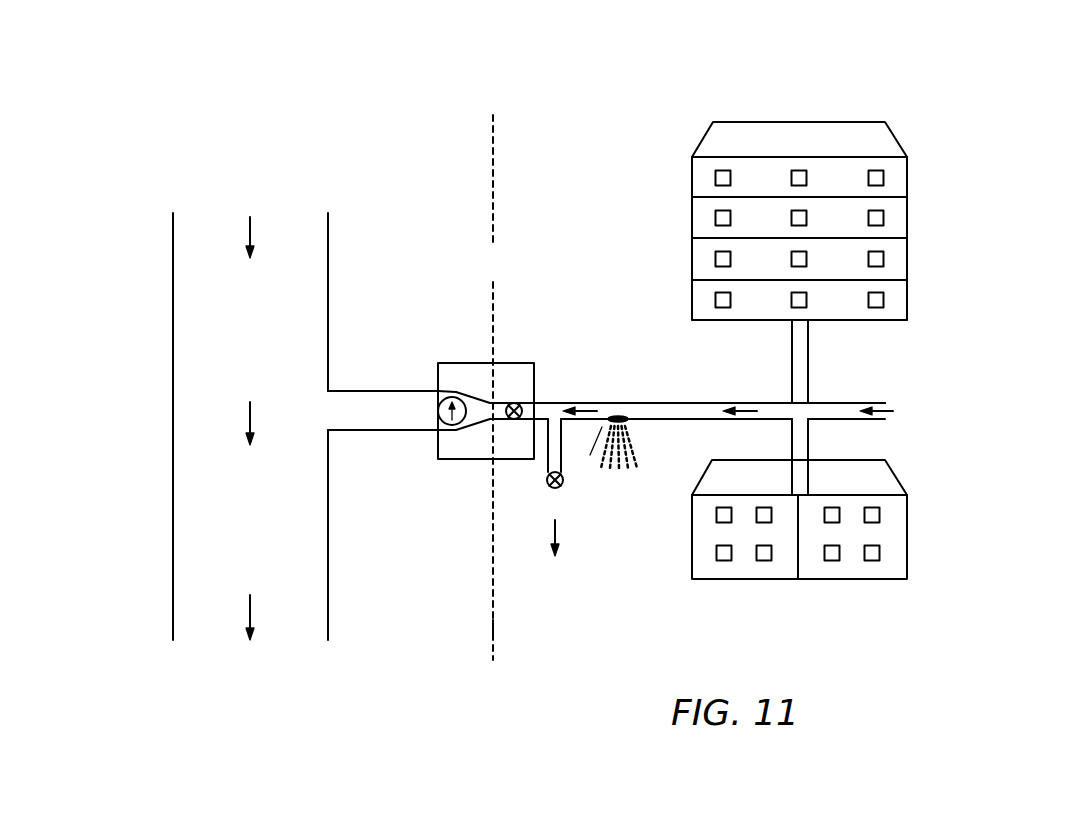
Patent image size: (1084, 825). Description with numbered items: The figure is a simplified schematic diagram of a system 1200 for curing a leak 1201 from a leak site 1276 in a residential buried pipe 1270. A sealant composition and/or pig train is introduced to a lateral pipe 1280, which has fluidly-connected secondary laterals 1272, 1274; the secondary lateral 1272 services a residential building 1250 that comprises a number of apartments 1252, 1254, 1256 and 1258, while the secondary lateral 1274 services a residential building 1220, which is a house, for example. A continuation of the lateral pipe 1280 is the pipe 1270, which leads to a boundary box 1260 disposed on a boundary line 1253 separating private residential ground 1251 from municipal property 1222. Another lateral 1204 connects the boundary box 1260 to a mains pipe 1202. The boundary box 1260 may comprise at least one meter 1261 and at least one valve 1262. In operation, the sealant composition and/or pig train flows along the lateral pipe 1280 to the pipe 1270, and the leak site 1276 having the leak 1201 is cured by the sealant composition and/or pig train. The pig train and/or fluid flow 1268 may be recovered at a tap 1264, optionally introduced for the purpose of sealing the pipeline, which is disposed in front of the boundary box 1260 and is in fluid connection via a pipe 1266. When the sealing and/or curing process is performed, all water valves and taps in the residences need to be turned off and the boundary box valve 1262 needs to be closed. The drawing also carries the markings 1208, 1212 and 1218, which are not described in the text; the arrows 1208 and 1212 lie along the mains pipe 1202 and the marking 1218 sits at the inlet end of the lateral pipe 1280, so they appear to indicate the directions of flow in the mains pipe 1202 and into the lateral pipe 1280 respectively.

The system 1200 is at (100, 194).
The leak 1201 is at (625, 458).
The mains pipe 1202 is at (172, 448).
The lateral 1204 is at (385, 390).
The flow direction arrows 1208 is at (250, 319).
The downstream flow 1212 is at (250, 631).
The inlet water supply 1218 is at (908, 411).
The residential building 1220 is at (727, 580).
The municipal property 1222 is at (424, 168).
The residential building 1250 is at (624, 110).
The private residential ground 1251 is at (514, 135).
The apartment 1252 is at (690, 302).
The boundary line 1253 is at (490, 652).
The apartment 1254 is at (690, 262).
The apartment 1256 is at (690, 221).
The apartment 1258 is at (690, 180).
The boundary box 1260 is at (537, 373).
The meter 1261 is at (446, 422).
The valve 1262 is at (510, 403).
The tap 1264 is at (535, 490).
The pipe 1266 is at (548, 467).
The fluid flow 1268 is at (547, 552).
The residential buried pipe 1270 is at (583, 402).
The secondary lateral 1272 is at (790, 346).
The secondary lateral 1274 is at (790, 434).
The leak site 1276 is at (596, 440).
The lateral pipe 1280 is at (835, 402).